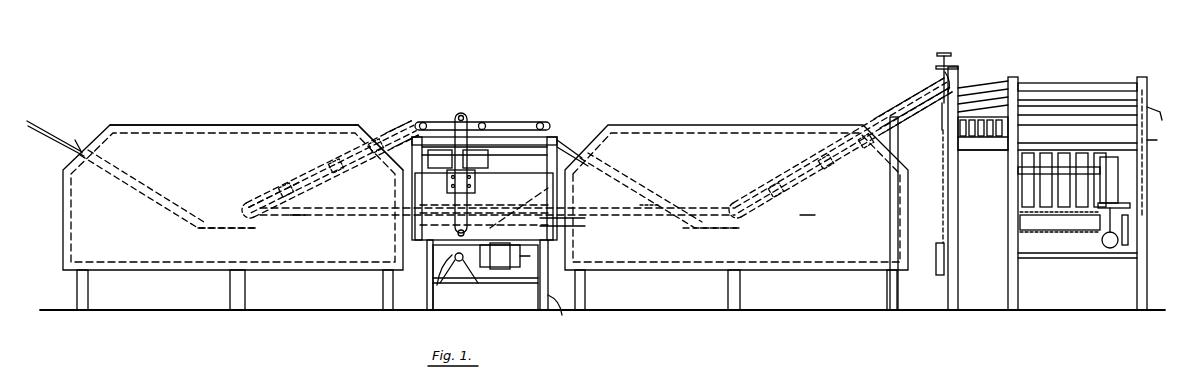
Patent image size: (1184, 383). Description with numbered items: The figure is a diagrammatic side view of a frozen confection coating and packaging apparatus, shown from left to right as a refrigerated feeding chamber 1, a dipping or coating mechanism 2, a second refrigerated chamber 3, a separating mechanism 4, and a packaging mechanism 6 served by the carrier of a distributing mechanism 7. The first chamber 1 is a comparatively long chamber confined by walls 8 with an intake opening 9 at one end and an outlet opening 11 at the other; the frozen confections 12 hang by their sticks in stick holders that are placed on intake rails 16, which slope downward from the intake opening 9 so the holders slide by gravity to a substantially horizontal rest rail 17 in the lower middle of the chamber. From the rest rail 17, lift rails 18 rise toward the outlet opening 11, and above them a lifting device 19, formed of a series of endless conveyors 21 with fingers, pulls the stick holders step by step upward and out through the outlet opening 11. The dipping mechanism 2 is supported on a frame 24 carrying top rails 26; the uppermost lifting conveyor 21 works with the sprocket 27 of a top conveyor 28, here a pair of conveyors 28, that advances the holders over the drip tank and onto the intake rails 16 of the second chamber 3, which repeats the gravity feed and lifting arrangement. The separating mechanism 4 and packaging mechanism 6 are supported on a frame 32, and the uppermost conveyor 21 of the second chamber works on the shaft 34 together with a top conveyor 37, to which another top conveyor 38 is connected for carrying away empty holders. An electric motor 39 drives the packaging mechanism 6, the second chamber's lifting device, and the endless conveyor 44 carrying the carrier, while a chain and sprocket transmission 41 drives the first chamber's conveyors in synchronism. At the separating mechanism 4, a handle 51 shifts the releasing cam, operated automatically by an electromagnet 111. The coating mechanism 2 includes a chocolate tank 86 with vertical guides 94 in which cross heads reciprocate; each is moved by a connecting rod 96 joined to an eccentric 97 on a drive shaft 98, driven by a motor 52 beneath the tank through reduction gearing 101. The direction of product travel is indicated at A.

The refrigerated feeding chamber 1 is at (173, 140).
The dipping or coating mechanism 2 is at (531, 102).
The second refrigerated chamber 3 is at (728, 127).
The separating mechanism 4 is at (994, 64).
The packaging mechanism 6 is at (1096, 78).
The distributing mechanism 7 is at (993, 160).
The walls 8 is at (226, 126).
The intake opening 9 is at (80, 152).
The outlet opening 11 is at (368, 135).
The frozen confections 12 is at (1005, 125).
The intake rails 16 is at (40, 130).
The rest rail 17 is at (220, 230).
The lift rails 18 is at (300, 218).
The lifting device 19 is at (326, 150).
The endless conveyors 21 is at (394, 140).
The frame 24 is at (558, 314).
The top rails 26 is at (535, 142).
The sprocket 27 is at (422, 121).
The top conveyor 28 is at (440, 122).
The frame 32 is at (1008, 288).
The shaft 34 is at (946, 78).
The top conveyor 37 is at (990, 90).
The top conveyor 38 is at (1060, 92).
The electric motor 39 is at (1110, 249).
The chain and sprocket transmission 41 is at (680, 208).
The endless conveyor 44 is at (1088, 124).
The handle 51 is at (941, 118).
The motor 52 is at (505, 270).
The tank 86 is at (548, 222).
The vertical guides 94 is at (464, 117).
The connecting rod 96 is at (468, 214).
The eccentric 97 is at (450, 276).
The drive shaft 98 is at (471, 276).
The reduction gearing 101 is at (433, 262).
The electromagnet 111 is at (950, 68).
The direction of travel A is at (284, 170).